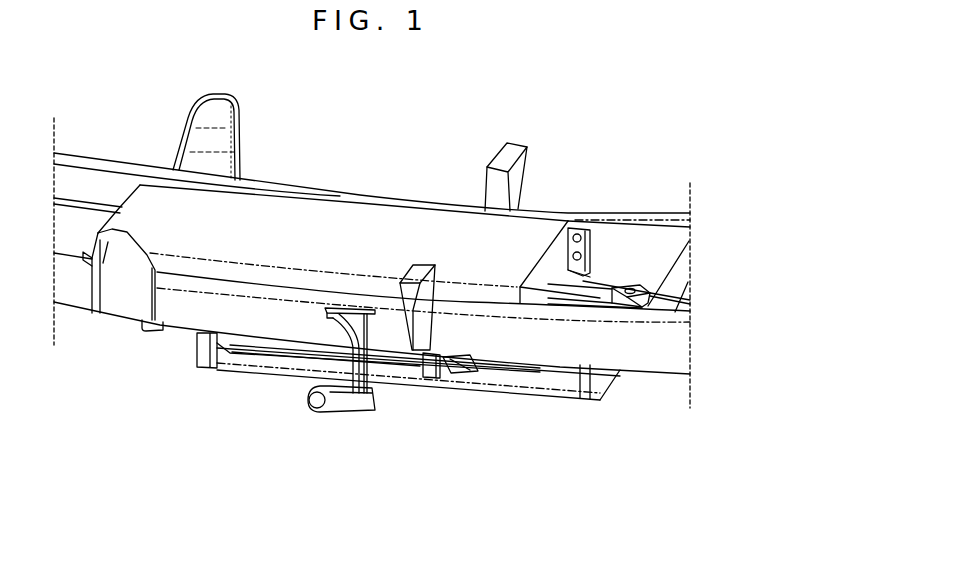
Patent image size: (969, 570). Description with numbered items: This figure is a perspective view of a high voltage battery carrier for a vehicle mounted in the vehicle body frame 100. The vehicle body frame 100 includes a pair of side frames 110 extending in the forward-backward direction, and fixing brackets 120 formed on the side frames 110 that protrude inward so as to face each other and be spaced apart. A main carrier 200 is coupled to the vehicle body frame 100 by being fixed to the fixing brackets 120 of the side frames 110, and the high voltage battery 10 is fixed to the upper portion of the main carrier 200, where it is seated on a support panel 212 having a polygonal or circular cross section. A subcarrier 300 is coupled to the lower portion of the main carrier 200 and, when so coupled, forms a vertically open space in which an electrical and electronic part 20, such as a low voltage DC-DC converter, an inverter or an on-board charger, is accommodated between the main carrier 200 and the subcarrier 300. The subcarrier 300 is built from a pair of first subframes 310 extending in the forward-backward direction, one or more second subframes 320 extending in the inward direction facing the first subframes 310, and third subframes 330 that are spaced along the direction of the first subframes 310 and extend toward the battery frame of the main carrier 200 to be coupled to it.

The high voltage battery 10 is at (330, 217).
The electrical and electronic part 20 is at (237, 345).
The vehicle body frame 100 is at (622, 202).
The side frame 110 is at (180, 310).
The fixing bracket 120 is at (580, 228).
The main carrier 200 is at (645, 280).
The support panel 212 is at (577, 278).
The subcarrier 300 is at (408, 425).
The first subframe 310 is at (400, 377).
The second subframe 320 is at (468, 376).
The third subframe 330 is at (430, 377).